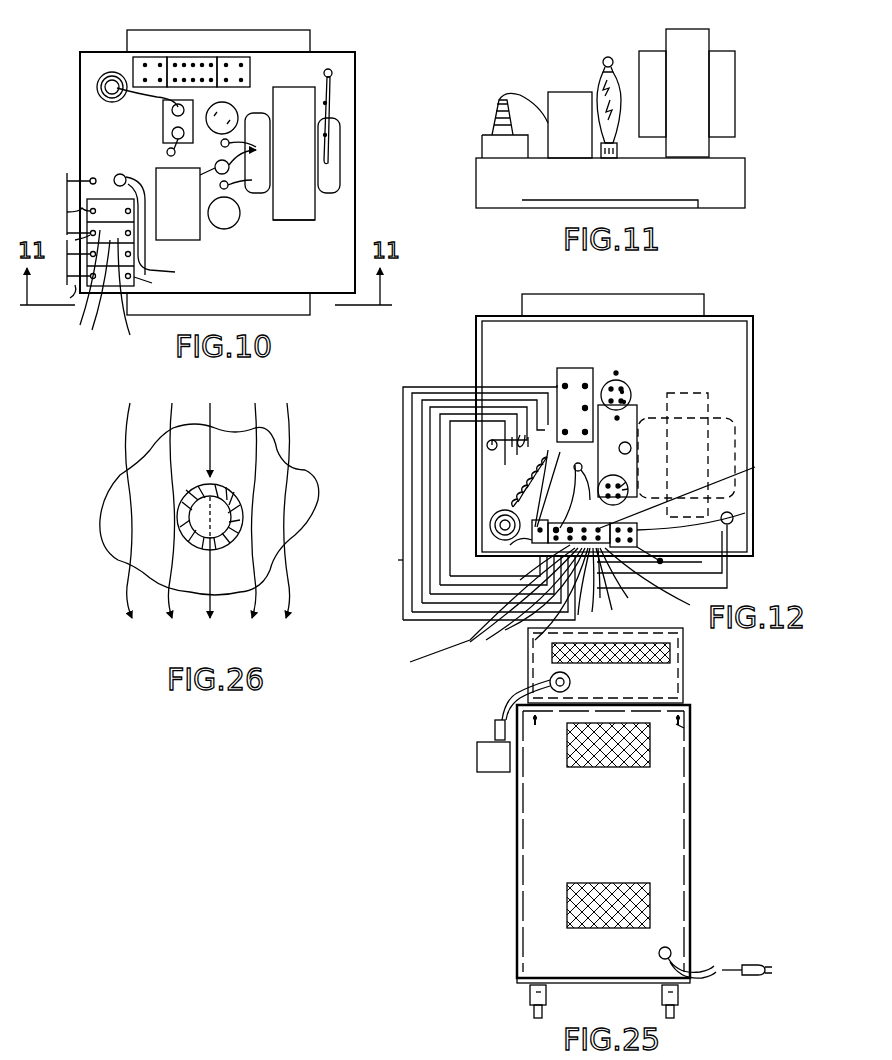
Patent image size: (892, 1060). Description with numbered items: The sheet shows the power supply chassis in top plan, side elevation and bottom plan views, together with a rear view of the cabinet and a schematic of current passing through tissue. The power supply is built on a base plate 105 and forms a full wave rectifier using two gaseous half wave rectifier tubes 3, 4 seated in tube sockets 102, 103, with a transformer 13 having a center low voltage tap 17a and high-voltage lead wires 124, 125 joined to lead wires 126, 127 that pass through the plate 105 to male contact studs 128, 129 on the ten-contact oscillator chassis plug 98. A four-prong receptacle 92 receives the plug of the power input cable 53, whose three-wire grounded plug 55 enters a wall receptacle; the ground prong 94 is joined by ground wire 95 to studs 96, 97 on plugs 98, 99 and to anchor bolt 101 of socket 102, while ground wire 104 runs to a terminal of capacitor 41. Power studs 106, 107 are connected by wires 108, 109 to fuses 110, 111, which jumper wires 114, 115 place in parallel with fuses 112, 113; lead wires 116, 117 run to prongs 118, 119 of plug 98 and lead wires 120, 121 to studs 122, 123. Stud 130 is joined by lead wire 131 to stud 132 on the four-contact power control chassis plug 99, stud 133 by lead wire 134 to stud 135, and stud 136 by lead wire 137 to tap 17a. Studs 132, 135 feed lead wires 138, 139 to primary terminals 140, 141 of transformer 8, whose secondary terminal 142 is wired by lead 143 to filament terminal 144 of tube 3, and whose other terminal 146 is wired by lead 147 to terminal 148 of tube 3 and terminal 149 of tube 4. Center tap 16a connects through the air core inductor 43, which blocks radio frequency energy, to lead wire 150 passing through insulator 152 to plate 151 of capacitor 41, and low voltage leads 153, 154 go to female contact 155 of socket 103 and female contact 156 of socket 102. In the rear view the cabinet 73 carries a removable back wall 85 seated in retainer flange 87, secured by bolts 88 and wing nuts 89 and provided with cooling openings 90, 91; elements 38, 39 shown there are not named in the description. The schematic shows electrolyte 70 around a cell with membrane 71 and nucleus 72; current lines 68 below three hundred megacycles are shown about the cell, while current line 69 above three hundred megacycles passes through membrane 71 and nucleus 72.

In FIG. 10, the gaseous half wave rectifier tube 3 is at (238, 109).
In FIG. 10, the gaseous half wave rectifier tube 4 is at (241, 219).
In FIG. 11, the gaseous half wave rectifier tube 4 is at (604, 60).
In FIG. 10, the transformer 8 is at (183, 241).
In FIG. 11, the transformer 8 is at (555, 90).
In FIG. 12, the transformer 8 is at (570, 366).
In FIG. 10, the transformer 13 is at (283, 222).
In FIG. 11, the transformer 13 is at (730, 50).
In FIG. 12, the center tap of secondary winding 16a is at (583, 408).
In FIG. 10, the center low voltage tap 17a is at (247, 153).
In FIG. 25, the conduit 38 is at (548, 683).
In FIG. 25, the sensor box 39 is at (497, 773).
In FIG. 10, the capacitor 41 is at (163, 133).
In FIG. 12, the air core high voltage inductor 43 is at (528, 488).
In FIG. 25, the power input cable 53 is at (702, 962).
In FIG. 25, the three-wire grounded type plug 55 is at (758, 965).
In FIG. 26, the current lines 68 is at (303, 431).
In FIG. 26, the current line 69 is at (212, 410).
In FIG. 26, the electrolyte 70 is at (320, 484).
In FIG. 26, the cell membrane 71 is at (242, 473).
In FIG. 26, the cell nucleus 72 is at (216, 550).
In FIG. 25, the outer cabinet 73 is at (515, 864).
In FIG. 25, the removable back panel 85 is at (672, 815).
In FIG. 10, the retainer flange 87 is at (79, 132).
In FIG. 11, the retainer flange 87 is at (510, 210).
In FIG. 12, the retainer flange 87 is at (474, 318).
In FIG. 25, the retainer flange 87 is at (555, 982).
In FIG. 25, the bolts 88 is at (683, 722).
In FIG. 25, the wing nuts 89 is at (681, 730).
In FIG. 25, the opening 90 is at (610, 928).
In FIG. 25, the opening 91 is at (605, 768).
In FIG. 10, the four-prong plug receptacle 92 is at (246, 61).
In FIG. 12, the male contact stud 94 is at (745, 515).
In FIG. 12, the ground wire 95 is at (666, 559).
In FIG. 12, the male contact stud 96 is at (533, 597).
In FIG. 12, the male contact stud 97 is at (528, 568).
In FIG. 10, the ten-contact male plug 98 is at (202, 63).
In FIG. 10, the four-contact male plug 99 is at (152, 60).
In FIG. 12, the anchor bolt 101 is at (630, 495).
In FIG. 12, the tube socket 102 is at (620, 487).
In FIG. 12, the tube socket 103 is at (630, 395).
In FIG. 10, the ground wire 104 is at (176, 152).
In FIG. 12, the ground wire 104 is at (574, 496).
In FIG. 10, the power supply chassis base plate 105 is at (345, 67).
In FIG. 12, the power supply chassis base plate 105 is at (737, 348).
In FIG. 12, the male contact stud 106 is at (637, 530).
In FIG. 12, the male contact stud 107 is at (637, 540).
In FIG. 10, the wire 108 is at (67, 181).
In FIG. 12, the wire 108 is at (498, 602).
In FIG. 10, the wire 109 is at (67, 203).
In FIG. 12, the wire 109 is at (477, 610).
In FIG. 10, the fuse 110 is at (107, 207).
In FIG. 10, the fuse 111 is at (78, 289).
In FIG. 10, the fuse 112 is at (96, 296).
In FIG. 10, the fuse 113 is at (141, 295).
In FIG. 10, the jumper wire 114 is at (88, 256).
In FIG. 10, the jumper wire 115 is at (81, 286).
In FIG. 10, the lead wire 116 is at (131, 221).
In FIG. 12, the lead wire 116 is at (440, 487).
In FIG. 10, the lead wire 117 is at (150, 283).
In FIG. 12, the lead wire 117 is at (422, 468).
In FIG. 12, the prong 118 is at (578, 590).
In FIG. 12, the prong 119 is at (607, 580).
In FIG. 10, the lead wire 120 is at (144, 251).
In FIG. 12, the lead wire 120 is at (580, 524).
In FIG. 10, the lead wire 121 is at (150, 268).
In FIG. 12, the lead wire 121 is at (403, 428).
In FIG. 12, the male contact stud 122 is at (602, 590).
In FIG. 12, the male contact stud 123 is at (658, 583).
In FIG. 10, the high-voltage lead wire 124 is at (325, 135).
In FIG. 10, the high-voltage lead wire 125 is at (332, 138).
In FIG. 10, the lead wire 126 is at (323, 75).
In FIG. 12, the lead wire 126 is at (722, 585).
In FIG. 10, the lead wire 127 is at (333, 96).
In FIG. 12, the lead wire 127 is at (727, 572).
In FIG. 12, the male contact stud 128 is at (628, 580).
In FIG. 12, the male contact stud 129 is at (697, 492).
In FIG. 12, the male contact stud 130 is at (544, 603).
In FIG. 12, the lead wire 131 is at (557, 527).
In FIG. 12, the male contact stud 132 is at (516, 607).
In FIG. 12, the male contact stud 133 is at (619, 588).
In FIG. 12, the lead wire 134 is at (572, 527).
In FIG. 12, the male contact stud 135 is at (520, 543).
In FIG. 12, the male contact stud 136 is at (548, 522).
In FIG. 12, the lead wire 137 is at (577, 461).
In FIG. 12, the lead wire 138 is at (403, 560).
In FIG. 12, the lead wire 139 is at (403, 533).
In FIG. 12, the primary winding terminal 140 is at (563, 383).
In FIG. 12, the primary winding terminal 141 is at (576, 423).
In FIG. 12, the secondary winding terminal 142 is at (586, 383).
In FIG. 12, the lead wire 143 is at (617, 451).
In FIG. 12, the filament terminal 144 is at (612, 392).
In FIG. 12, the secondary winding terminal 146 is at (557, 451).
In FIG. 12, the lead wire 147 is at (598, 482).
In FIG. 12, the terminal 148 is at (625, 402).
In FIG. 12, the terminal 149 is at (631, 448).
In FIG. 10, the lead wire 150 is at (137, 96).
In FIG. 10, the capacitor plate 151 is at (184, 107).
In FIG. 10, the insulator 152 is at (120, 68).
In FIG. 12, the insulator 152 is at (504, 514).
In FIG. 10, the low voltage lead 153 is at (231, 188).
In FIG. 10, the low voltage lead 154 is at (181, 204).
In FIG. 12, the female contact 155 is at (622, 392).
In FIG. 12, the female contact 156 is at (622, 490).